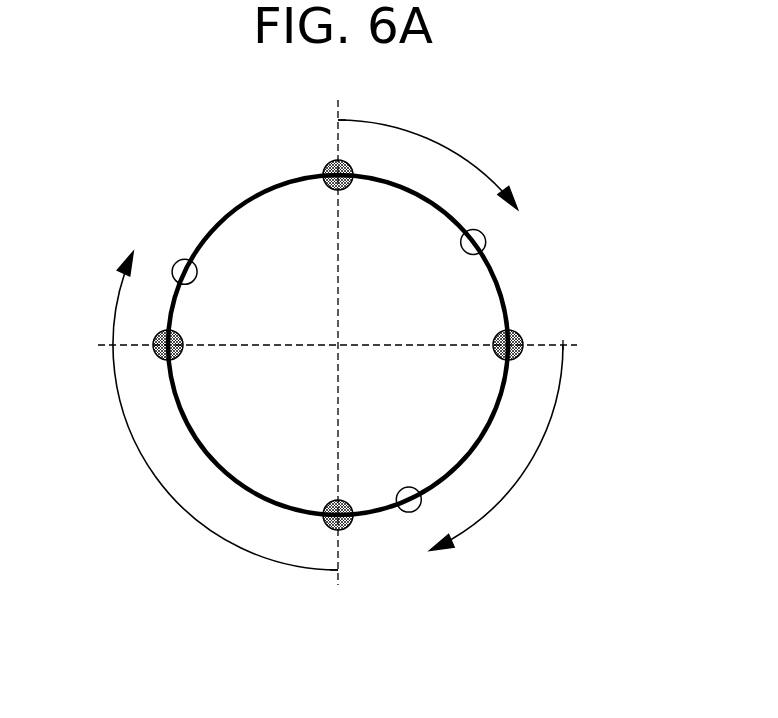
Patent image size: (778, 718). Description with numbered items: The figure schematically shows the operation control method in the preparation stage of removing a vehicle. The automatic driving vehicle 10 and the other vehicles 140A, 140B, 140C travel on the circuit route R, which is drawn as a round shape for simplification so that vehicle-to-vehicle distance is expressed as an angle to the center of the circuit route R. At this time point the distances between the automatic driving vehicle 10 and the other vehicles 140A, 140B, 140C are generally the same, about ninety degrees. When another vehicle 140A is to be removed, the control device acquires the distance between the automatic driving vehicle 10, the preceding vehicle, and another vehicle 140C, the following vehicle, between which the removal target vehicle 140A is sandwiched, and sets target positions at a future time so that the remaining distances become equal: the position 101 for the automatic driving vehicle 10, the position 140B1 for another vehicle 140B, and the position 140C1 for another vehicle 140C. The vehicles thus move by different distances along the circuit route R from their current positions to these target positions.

The automatic driving vehicle 10 is at (328, 164).
The circuit route R is at (233, 210).
The position 101 is at (487, 238).
The another vehicle 140A is at (160, 335).
The another vehicle 140B is at (520, 336).
The another vehicle 140C is at (350, 528).
The position 140B1 is at (408, 513).
The position 140C1 is at (178, 261).